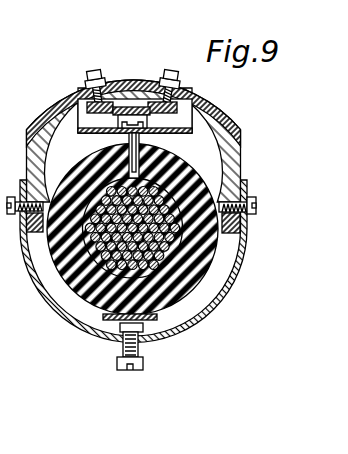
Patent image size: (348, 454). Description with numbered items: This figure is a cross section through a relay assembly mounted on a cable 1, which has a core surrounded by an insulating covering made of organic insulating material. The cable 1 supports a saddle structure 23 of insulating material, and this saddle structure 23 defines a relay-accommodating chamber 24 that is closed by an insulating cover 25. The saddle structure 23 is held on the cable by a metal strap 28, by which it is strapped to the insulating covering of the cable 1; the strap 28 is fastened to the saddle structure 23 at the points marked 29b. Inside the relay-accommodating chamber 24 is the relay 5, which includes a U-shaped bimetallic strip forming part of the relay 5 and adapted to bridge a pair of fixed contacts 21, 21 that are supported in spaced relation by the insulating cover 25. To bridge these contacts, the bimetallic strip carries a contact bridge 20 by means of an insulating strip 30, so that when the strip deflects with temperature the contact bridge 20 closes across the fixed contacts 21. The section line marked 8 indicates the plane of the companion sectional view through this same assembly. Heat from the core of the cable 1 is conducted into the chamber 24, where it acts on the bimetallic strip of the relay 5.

The cable 1 is at (226, 279).
The relay 5 is at (66, 91).
The section line 8- 8 is at (108, 34).
The contact bridge 20 is at (158, 113).
The fixed contacts 21 is at (150, 103).
The saddle structure 23 is at (242, 146).
The relay-accommodating chamber 24 is at (97, 123).
The insulating cover 25 is at (226, 108).
The metal strap 28 is at (241, 271).
The strap fastening point 29b is at (257, 212).
The insulating strip 30 is at (113, 111).